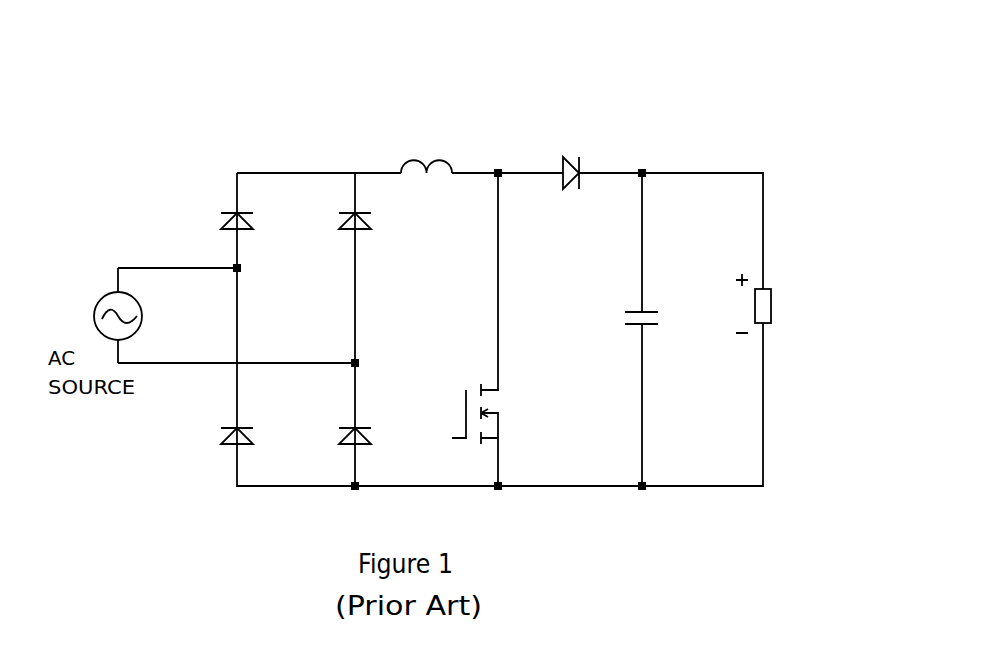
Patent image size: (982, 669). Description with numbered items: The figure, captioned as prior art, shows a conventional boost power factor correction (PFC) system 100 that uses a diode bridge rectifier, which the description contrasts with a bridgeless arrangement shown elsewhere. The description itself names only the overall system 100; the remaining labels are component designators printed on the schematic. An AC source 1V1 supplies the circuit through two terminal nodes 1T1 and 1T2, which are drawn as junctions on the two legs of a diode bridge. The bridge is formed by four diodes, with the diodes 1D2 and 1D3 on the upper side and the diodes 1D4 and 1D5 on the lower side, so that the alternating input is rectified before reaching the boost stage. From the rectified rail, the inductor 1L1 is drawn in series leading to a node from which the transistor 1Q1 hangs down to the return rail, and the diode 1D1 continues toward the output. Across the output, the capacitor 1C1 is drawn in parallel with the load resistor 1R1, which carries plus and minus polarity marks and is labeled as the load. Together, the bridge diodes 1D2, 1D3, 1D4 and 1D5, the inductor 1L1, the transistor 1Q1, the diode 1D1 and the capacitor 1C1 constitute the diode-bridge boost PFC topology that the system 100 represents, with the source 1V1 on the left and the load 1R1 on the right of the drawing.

The boost power factor correction (PFC) system 100 is at (721, 106).
The AC source 1V1 is at (94, 315).
The bridge rectifier diode 1D2 is at (215, 214).
The bridge rectifier diode 1D3 is at (334, 214).
The bridge rectifier diode 1D4 is at (215, 428).
The bridge rectifier diode 1D5 is at (334, 428).
The AC input terminal node 1T1 is at (264, 276).
The AC input terminal node 1T2 is at (379, 363).
The boost inductor 1L1 is at (426, 187).
The boost diode 1D1 is at (567, 186).
The output capacitor 1C1 is at (662, 311).
The load resistor 1R1 is at (788, 303).
The switching transistor (MOSFET) 1Q1 is at (475, 329).